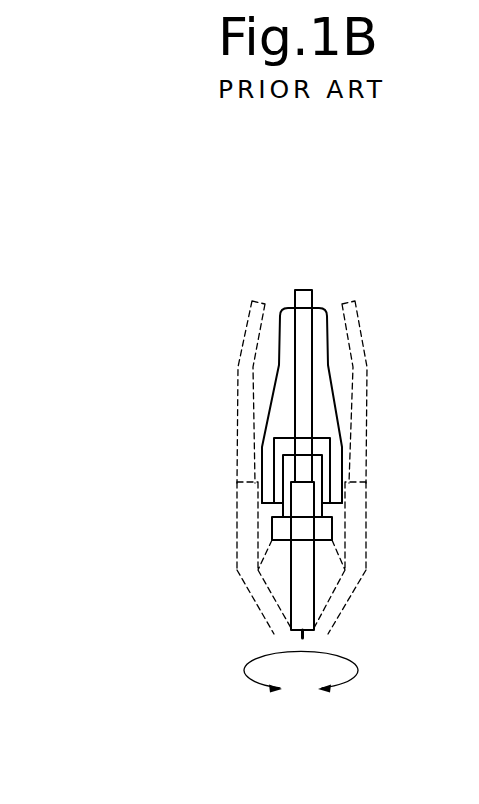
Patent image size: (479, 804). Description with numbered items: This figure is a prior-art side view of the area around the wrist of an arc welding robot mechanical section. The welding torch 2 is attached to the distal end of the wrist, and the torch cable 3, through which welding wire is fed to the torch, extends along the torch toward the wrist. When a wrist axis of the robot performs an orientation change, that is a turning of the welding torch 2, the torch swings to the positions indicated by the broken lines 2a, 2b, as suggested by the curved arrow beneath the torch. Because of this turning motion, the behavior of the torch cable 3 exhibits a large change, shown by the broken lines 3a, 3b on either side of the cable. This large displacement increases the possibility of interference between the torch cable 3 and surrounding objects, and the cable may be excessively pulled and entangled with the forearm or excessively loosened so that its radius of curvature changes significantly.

The welding torch 2 is at (302, 608).
The broken line showing turning position of welding torch 2a is at (257, 570).
The broken line showing turning position of welding torch 2b is at (345, 571).
The torch cable 3 is at (303, 342).
The broken line showing changed behavior of torch cable 3a is at (239, 385).
The broken line showing changed behavior of torch cable 3b is at (364, 379).